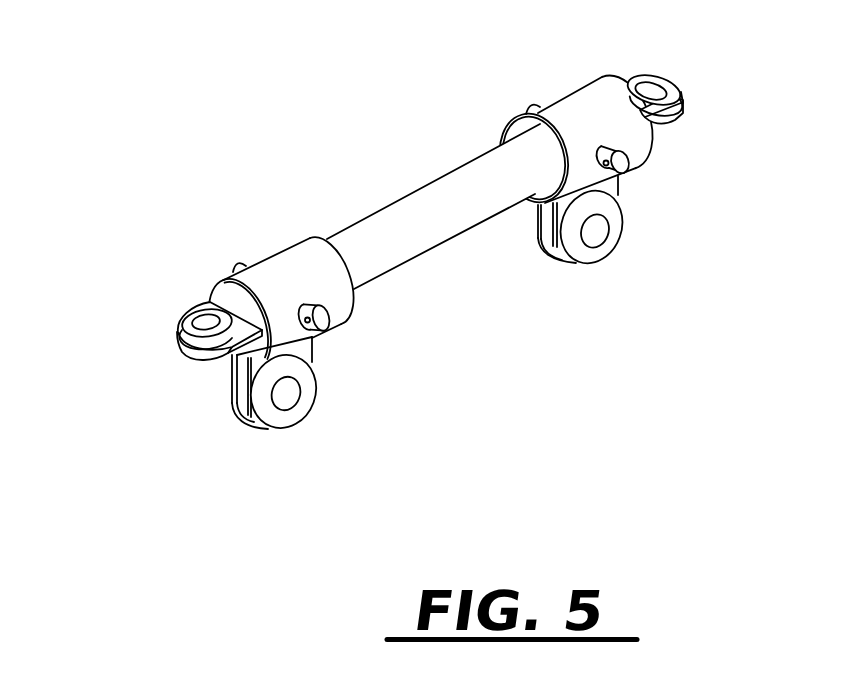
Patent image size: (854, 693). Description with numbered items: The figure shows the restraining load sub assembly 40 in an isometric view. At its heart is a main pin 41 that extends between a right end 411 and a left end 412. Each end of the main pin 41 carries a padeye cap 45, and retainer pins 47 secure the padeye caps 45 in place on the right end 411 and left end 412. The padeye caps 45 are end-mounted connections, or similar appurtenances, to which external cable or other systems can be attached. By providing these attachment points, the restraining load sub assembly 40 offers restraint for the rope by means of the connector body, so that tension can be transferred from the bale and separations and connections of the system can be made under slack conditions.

The restraining load sub assembly 40 is at (421, 221).
The main pin 41 is at (438, 253).
The right end 411 is at (663, 140).
The left end 412 is at (183, 278).
The padeye caps 45 is at (560, 90).
The retainer pins 47 is at (627, 175).